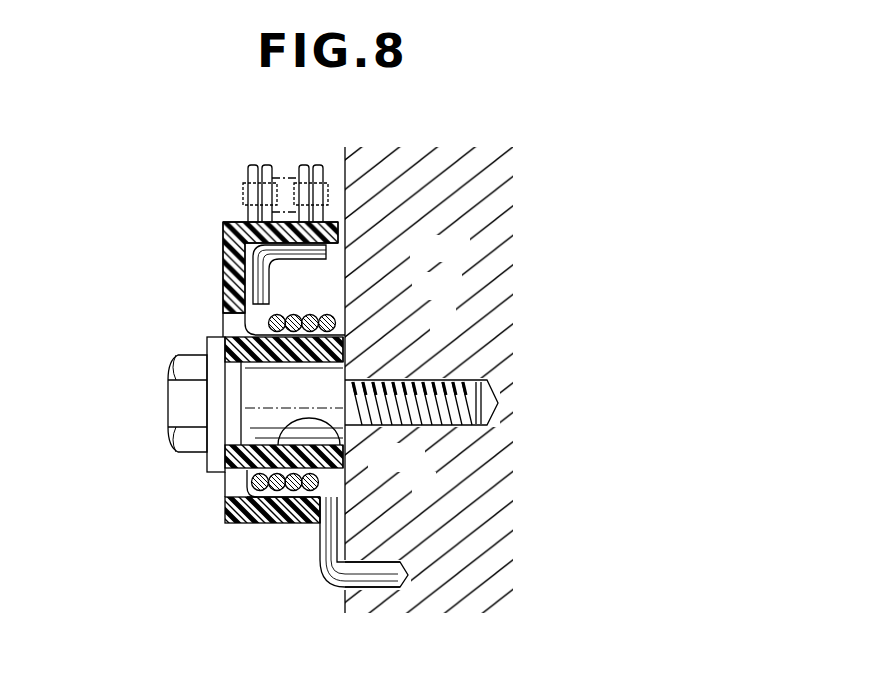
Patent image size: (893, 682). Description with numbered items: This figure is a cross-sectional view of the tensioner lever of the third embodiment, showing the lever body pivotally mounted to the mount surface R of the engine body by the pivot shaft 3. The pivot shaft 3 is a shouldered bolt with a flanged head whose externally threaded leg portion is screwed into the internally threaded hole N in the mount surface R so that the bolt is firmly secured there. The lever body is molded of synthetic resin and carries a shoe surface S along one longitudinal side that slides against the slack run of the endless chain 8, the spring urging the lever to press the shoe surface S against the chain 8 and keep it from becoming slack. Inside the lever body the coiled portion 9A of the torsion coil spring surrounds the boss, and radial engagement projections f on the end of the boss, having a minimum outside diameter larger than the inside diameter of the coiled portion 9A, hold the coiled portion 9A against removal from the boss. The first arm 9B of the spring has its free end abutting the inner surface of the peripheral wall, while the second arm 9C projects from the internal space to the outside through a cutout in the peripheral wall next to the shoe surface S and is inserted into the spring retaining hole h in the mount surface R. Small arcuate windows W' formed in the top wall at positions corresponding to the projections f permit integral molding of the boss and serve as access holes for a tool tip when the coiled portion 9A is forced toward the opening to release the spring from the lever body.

The pivot shaft 3 is at (157, 387).
The endless chain 8 is at (290, 182).
The coiled portion 9A is at (302, 318).
The first arm 9B is at (262, 262).
The second arm 9C is at (326, 552).
The internally threaded hole N is at (480, 383).
The mount surface R is at (343, 172).
The shoe surface S is at (237, 222).
The windows W' is at (183, 413).
The radial engagement projections f is at (347, 325).
The spring retaining hole h is at (386, 590).